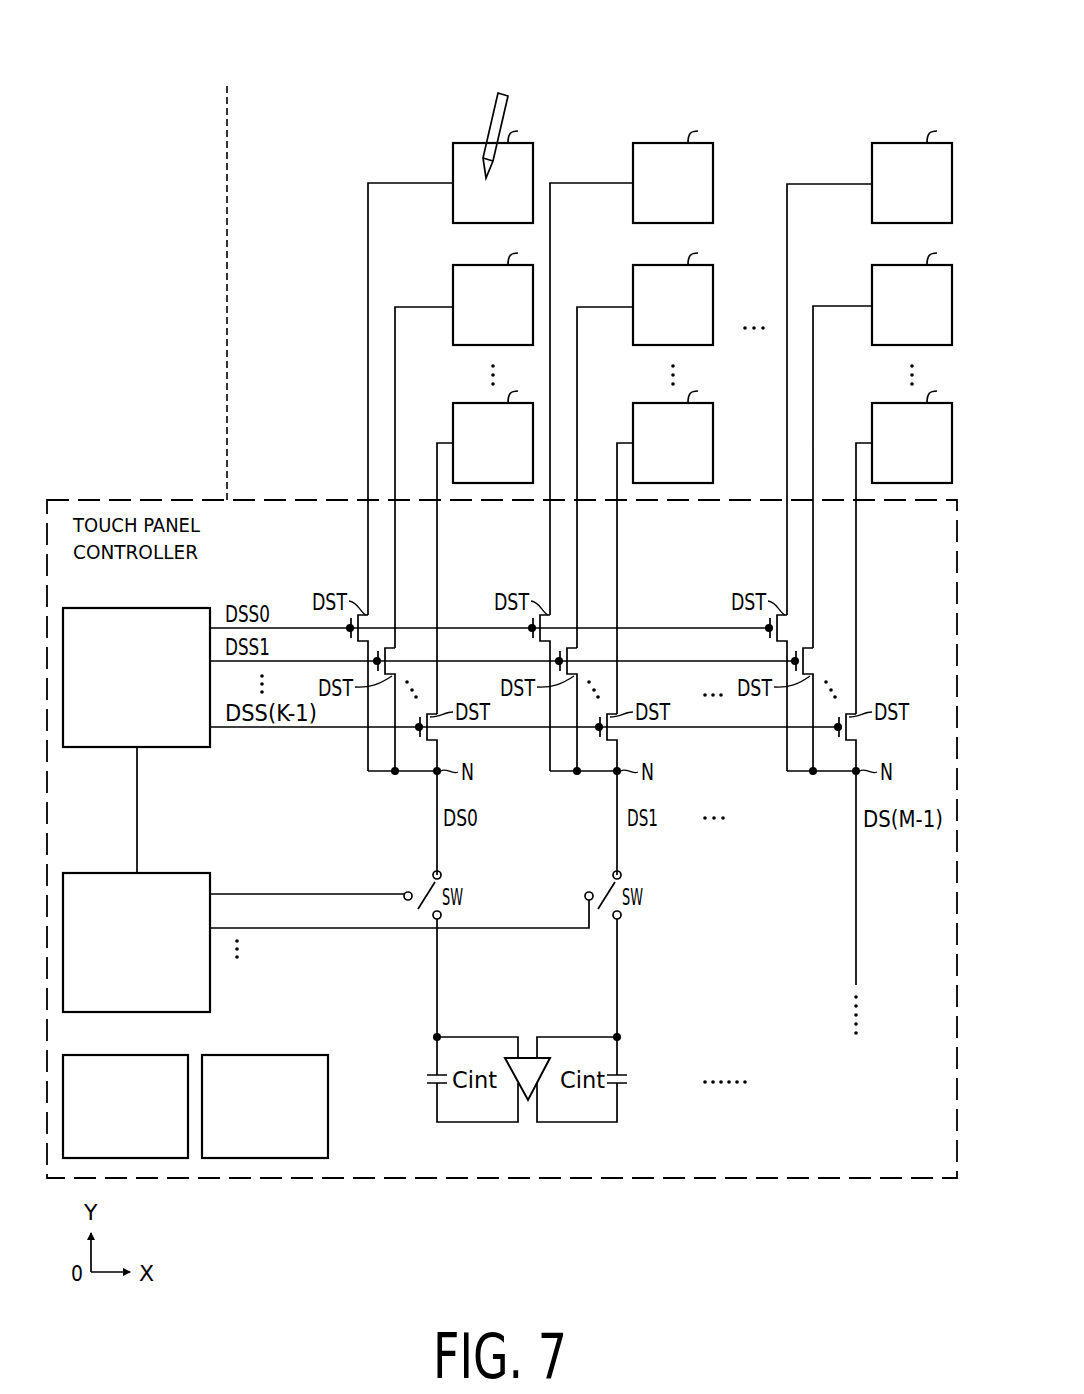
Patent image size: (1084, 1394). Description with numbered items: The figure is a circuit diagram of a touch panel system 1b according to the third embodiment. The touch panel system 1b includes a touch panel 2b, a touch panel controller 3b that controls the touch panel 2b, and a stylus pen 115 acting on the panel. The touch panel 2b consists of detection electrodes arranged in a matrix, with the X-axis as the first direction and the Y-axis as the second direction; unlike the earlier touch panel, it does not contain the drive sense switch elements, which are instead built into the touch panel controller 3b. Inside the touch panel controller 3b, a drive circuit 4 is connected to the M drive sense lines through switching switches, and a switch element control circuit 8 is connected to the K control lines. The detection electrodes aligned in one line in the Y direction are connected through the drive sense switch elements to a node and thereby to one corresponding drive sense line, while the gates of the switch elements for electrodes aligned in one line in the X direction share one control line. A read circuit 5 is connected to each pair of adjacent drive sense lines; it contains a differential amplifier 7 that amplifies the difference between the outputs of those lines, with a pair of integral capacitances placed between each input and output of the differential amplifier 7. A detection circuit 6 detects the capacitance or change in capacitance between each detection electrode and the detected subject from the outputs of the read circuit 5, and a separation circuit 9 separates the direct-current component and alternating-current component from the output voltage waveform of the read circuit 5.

The touch panel system 1b is at (353, 51).
The touch panel 2b is at (349, 127).
The touch panel controller 3b is at (228, 280).
The stylus pen 115 is at (508, 99).
The switch element control circuit 8 is at (174, 608).
The drive circuit 4 is at (174, 873).
The detection circuit 6 is at (154, 1055).
The separation circuit 9 is at (292, 1055).
The read circuit 5 is at (602, 1069).
The differential amplifier 7 is at (531, 1103).